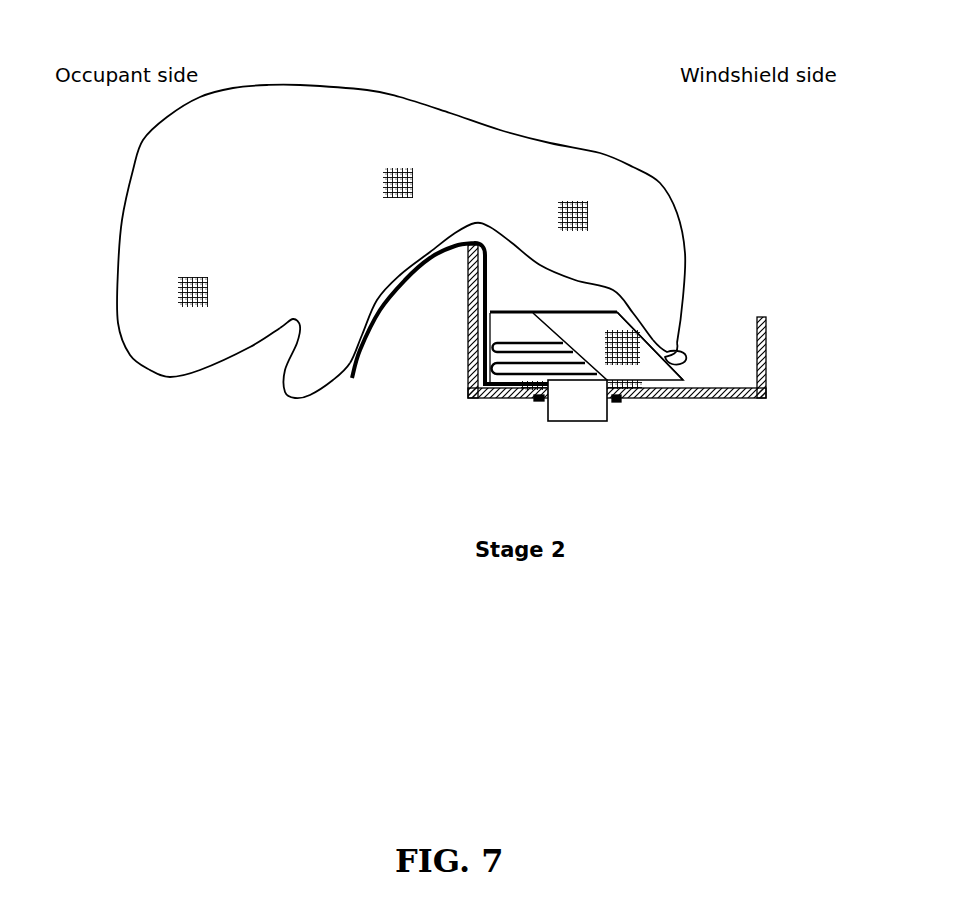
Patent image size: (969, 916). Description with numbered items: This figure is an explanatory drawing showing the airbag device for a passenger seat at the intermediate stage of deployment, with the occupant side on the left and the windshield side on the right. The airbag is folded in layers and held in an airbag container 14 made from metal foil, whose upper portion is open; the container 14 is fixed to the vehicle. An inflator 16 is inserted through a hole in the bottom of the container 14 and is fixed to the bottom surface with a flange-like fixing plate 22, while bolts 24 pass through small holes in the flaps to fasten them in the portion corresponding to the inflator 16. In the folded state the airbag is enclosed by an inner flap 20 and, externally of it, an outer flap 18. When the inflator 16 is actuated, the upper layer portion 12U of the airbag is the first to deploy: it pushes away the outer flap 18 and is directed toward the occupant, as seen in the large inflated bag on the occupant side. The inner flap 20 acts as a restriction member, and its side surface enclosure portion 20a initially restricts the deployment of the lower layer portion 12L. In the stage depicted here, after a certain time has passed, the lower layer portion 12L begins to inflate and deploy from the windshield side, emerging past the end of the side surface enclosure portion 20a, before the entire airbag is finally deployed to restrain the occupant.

The upper layer portion 12U is at (292, 92).
The lower layer portion 12L is at (308, 388).
The outer flap 18 is at (350, 377).
The airbag container 14 is at (766, 370).
The inner flap 20 is at (505, 311).
The side surface enclosure portion 20a is at (668, 382).
The inflator 16 is at (583, 422).
The fixing plate 22 is at (623, 398).
The bolts 24 is at (540, 401).